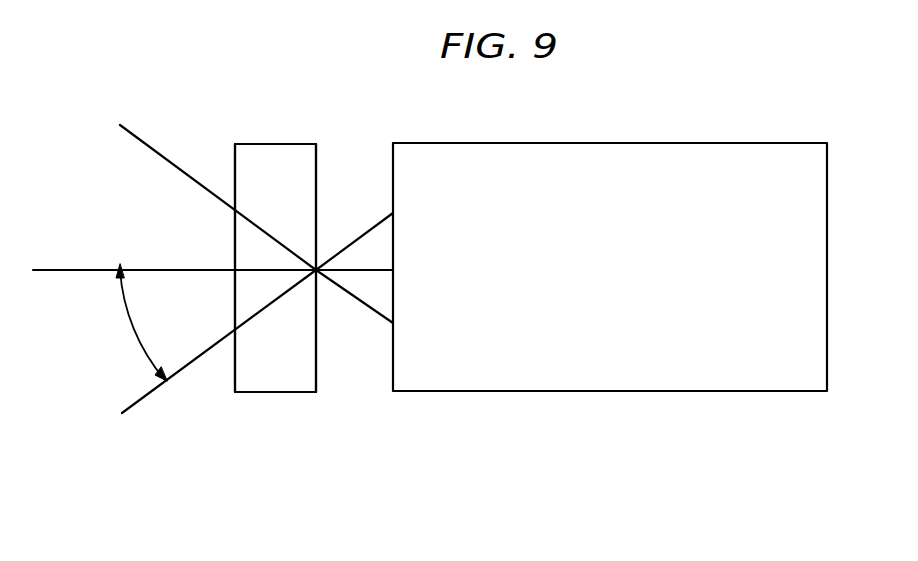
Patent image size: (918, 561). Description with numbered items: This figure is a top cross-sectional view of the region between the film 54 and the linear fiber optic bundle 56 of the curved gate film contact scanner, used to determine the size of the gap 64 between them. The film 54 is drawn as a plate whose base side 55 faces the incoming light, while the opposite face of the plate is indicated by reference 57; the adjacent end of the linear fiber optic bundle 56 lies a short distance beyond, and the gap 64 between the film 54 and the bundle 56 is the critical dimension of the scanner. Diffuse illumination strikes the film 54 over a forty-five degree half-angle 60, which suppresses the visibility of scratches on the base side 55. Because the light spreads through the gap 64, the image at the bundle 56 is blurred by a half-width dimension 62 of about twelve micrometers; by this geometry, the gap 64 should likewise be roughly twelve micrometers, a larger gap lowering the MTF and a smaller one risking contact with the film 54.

The film 54 is at (287, 144).
The base side of the film 55 is at (235, 152).
The linear fiber optic bundle 56 is at (558, 155).
The rear surface of plate 57 is at (316, 158).
The forty-five degree half-angle 60 is at (130, 338).
The half-width dimension 62 is at (406, 213).
The gap 64 is at (393, 404).